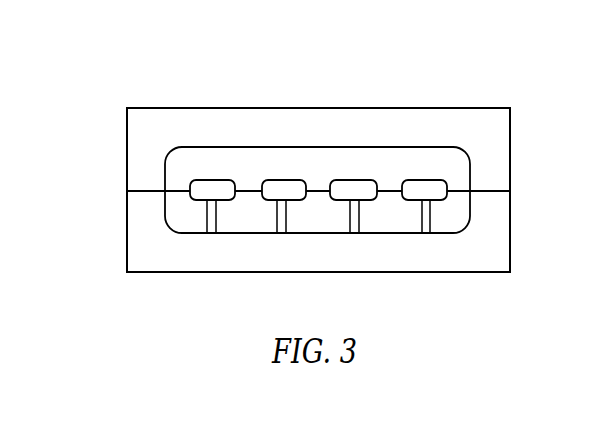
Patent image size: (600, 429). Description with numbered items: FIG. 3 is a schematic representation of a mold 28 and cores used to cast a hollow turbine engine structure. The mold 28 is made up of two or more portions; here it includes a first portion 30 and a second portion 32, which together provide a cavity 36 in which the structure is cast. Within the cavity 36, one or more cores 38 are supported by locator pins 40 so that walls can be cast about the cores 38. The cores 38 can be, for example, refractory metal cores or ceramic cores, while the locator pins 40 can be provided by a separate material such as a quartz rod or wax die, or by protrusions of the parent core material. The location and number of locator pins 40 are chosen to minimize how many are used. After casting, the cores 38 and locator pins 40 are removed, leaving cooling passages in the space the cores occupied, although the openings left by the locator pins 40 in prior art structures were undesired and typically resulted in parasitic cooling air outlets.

The mold 28 is at (180, 86).
The first portion 30 is at (127, 137).
The second portion 32 is at (127, 224).
The cavity 36 is at (310, 163).
The cores 38 is at (276, 180).
The locator pins 40 is at (281, 221).